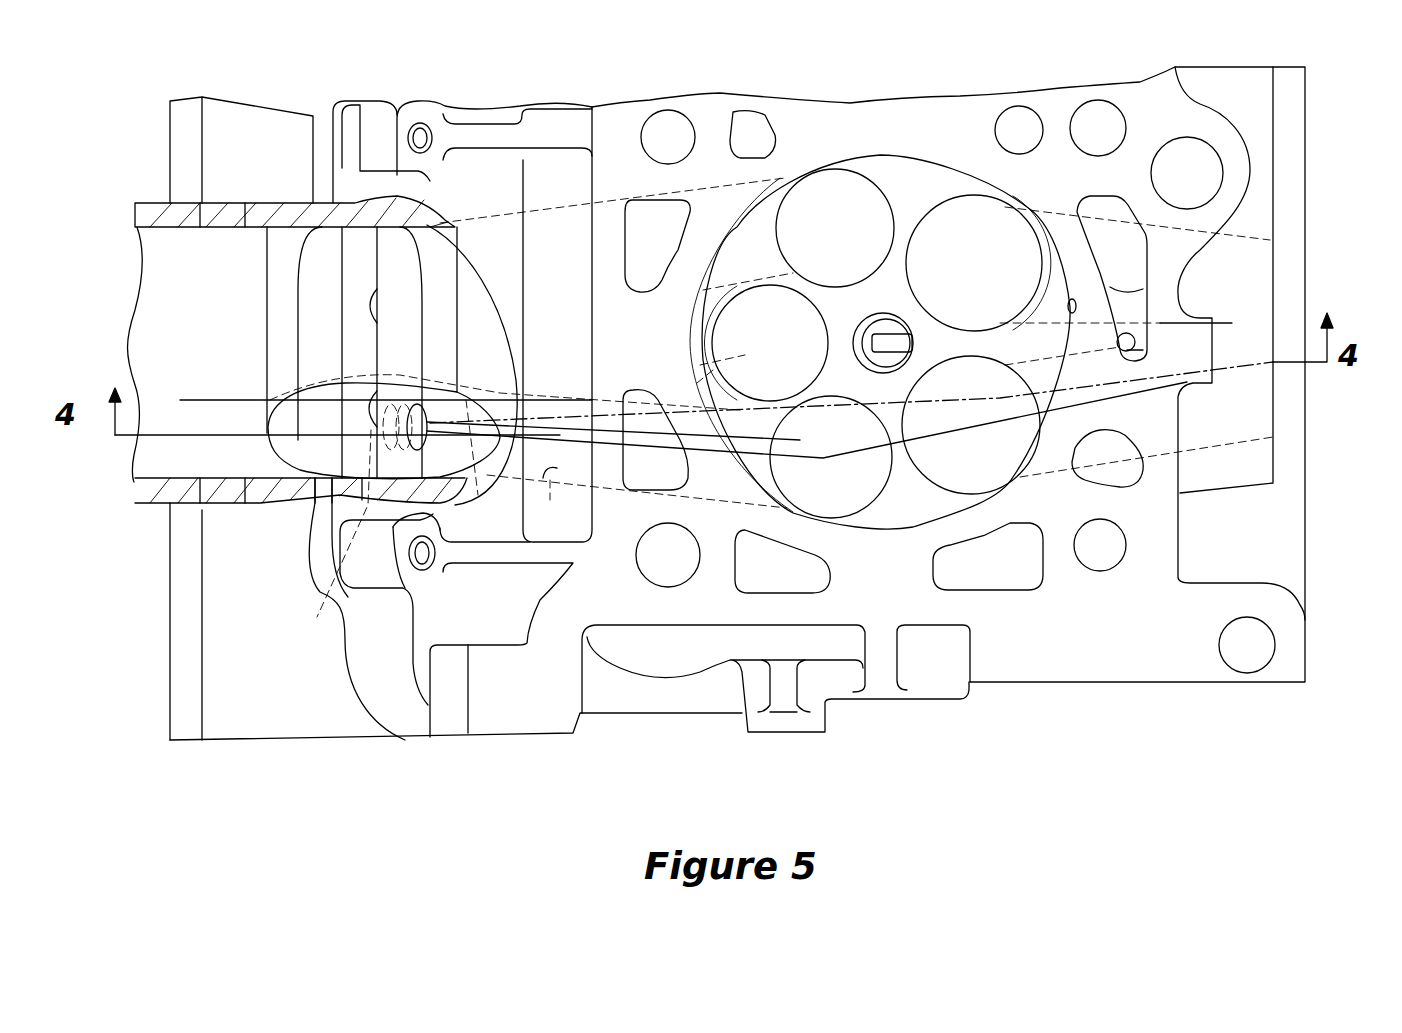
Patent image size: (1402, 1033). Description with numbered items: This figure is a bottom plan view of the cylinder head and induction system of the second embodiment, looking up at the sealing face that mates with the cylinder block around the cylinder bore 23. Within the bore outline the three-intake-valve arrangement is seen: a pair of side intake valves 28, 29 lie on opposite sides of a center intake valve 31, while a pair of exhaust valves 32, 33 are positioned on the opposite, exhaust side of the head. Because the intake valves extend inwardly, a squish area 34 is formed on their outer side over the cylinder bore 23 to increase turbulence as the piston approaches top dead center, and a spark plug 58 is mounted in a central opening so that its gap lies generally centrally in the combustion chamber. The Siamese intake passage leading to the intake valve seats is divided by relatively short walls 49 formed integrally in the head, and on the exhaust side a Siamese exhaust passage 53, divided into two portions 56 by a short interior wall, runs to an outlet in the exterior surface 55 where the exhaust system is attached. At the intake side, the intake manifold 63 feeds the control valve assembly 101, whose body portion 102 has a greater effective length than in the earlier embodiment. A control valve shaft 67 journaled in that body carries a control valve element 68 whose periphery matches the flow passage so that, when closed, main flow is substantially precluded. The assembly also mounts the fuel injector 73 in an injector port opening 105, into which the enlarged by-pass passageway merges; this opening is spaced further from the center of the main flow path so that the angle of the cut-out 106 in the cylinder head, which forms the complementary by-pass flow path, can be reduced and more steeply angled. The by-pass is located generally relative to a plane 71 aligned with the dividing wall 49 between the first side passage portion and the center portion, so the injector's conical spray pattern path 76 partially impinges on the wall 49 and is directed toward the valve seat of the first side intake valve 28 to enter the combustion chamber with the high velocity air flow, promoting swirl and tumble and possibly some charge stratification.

The cylinder bore 23 is at (1073, 305).
The side intake valve 28 is at (843, 500).
The side intake valve 29 is at (837, 183).
The center intake valve 31 is at (800, 327).
The exhaust valve 32 is at (993, 477).
The exhaust valve 33 is at (967, 207).
The squish area 34 is at (703, 303).
The walls 49 is at (713, 370).
The exhaust passage 53 is at (1240, 438).
The exterior surface 55 is at (1310, 537).
The portions of exhaust passage 56 is at (1090, 203).
The spark plug 58 is at (887, 323).
The intake manifold 63 is at (155, 505).
The control valve shaft 67 is at (355, 250).
The control valve element 68 is at (297, 300).
The plane 71 is at (197, 393).
The fuel injector 73 is at (381, 570).
The conical spray pattern path 76 is at (787, 427).
The control valve assembly 101 is at (293, 189).
The body portion 102 is at (388, 212).
The injector port opening 105 is at (432, 445).
The cut-out 106 is at (516, 324).